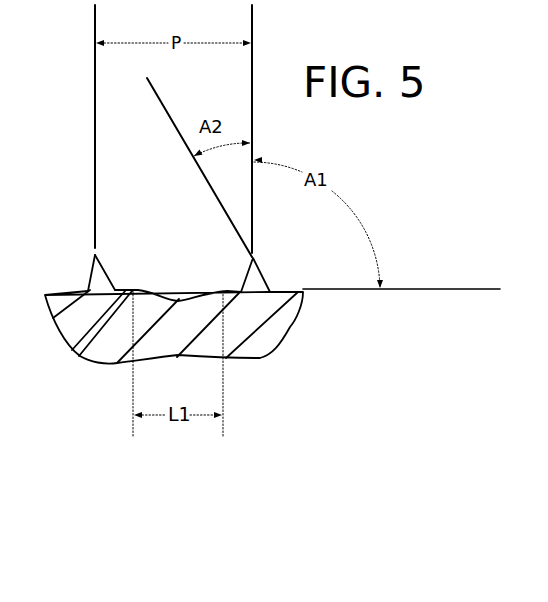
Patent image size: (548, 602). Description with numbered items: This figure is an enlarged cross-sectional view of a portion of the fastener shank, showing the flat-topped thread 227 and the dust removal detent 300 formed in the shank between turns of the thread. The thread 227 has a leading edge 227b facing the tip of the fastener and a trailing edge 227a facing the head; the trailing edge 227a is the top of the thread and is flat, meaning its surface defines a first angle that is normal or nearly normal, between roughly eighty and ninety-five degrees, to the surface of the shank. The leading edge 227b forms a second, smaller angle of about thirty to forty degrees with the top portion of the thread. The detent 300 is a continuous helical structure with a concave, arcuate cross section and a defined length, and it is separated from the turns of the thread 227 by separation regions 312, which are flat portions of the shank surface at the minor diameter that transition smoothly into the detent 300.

The dust removal detent 300 is at (185, 295).
The flat-topped thread 227 is at (261, 277).
The trailing edge of the thread 227a is at (85, 279).
The leading edge of the thread 227b is at (110, 279).
The separation region 312 is at (76, 352).